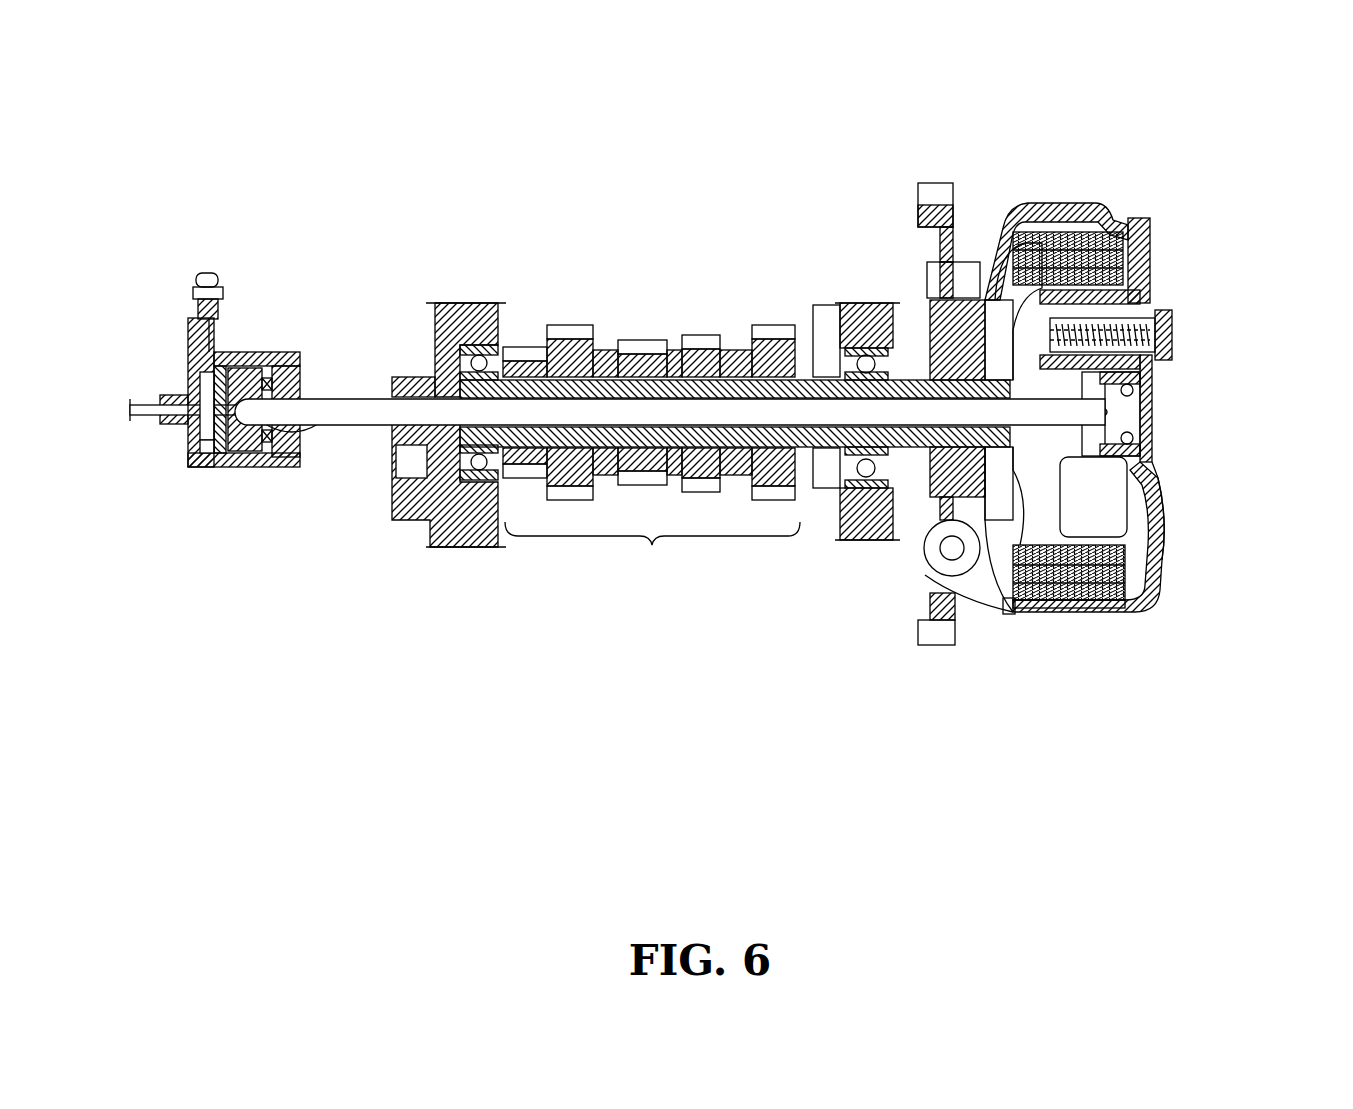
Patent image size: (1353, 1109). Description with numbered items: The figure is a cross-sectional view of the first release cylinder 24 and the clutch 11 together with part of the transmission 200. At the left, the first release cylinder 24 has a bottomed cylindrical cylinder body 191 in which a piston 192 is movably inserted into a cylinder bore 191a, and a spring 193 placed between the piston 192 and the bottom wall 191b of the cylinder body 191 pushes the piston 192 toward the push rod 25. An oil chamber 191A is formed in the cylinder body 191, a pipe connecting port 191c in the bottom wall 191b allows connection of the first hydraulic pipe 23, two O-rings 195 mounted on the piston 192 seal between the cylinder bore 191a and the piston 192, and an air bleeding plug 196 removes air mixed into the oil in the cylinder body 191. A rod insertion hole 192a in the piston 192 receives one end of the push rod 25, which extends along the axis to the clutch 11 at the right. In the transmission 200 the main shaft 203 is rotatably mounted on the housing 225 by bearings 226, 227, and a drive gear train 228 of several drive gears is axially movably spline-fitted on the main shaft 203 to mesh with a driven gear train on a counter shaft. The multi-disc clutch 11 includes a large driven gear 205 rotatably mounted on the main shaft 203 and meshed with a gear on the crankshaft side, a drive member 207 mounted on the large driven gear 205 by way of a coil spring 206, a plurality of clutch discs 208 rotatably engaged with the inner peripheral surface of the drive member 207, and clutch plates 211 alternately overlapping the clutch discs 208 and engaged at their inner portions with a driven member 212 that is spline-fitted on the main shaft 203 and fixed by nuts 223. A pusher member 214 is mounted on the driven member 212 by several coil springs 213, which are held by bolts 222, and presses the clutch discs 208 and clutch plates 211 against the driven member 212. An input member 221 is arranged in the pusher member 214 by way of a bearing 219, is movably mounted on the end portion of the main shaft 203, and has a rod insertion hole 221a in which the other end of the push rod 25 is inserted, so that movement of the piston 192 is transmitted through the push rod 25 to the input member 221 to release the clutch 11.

The clutch 11 is at (1091, 421).
The first hydraulic pipe 23 is at (162, 405).
The first release cylinder 24 is at (221, 371).
The push rod 25 is at (406, 408).
The cylinder body 191 is at (221, 418).
The cylinder bore 191a is at (300, 380).
The oil chamber 191A is at (205, 436).
The bottom wall 191b is at (199, 462).
The pipe connecting port 191c is at (175, 395).
The piston 192 is at (253, 470).
The rod insertion hole 192a is at (308, 428).
The spring 193 is at (220, 458).
The O-ring 195 is at (245, 465).
The air bleeding plug 196 is at (208, 283).
The transmission 200 is at (696, 382).
The main shaft 203 is at (727, 388).
The large driven gear 205 is at (935, 195).
The coil spring 206 is at (930, 552).
The drive member 207 is at (1035, 205).
The clutch disc 208 is at (1025, 618).
The clutch plate 211 is at (1035, 618).
The driven member 212 is at (1015, 622).
The coil spring 213 is at (1157, 277).
The pusher member 214 is at (1160, 545).
The bearing 219 is at (1140, 475).
The input member 221 is at (1145, 397).
The rod insertion hole 221a is at (1108, 424).
The bolt 222 is at (1173, 325).
The nut 223 is at (1083, 467).
The housing 225 is at (457, 303).
The bearing 226 is at (498, 345).
The bearing 227 is at (866, 305).
The drive gear train 228 is at (651, 452).